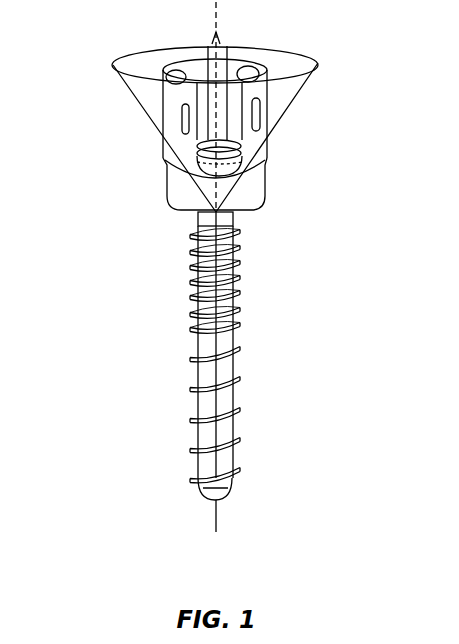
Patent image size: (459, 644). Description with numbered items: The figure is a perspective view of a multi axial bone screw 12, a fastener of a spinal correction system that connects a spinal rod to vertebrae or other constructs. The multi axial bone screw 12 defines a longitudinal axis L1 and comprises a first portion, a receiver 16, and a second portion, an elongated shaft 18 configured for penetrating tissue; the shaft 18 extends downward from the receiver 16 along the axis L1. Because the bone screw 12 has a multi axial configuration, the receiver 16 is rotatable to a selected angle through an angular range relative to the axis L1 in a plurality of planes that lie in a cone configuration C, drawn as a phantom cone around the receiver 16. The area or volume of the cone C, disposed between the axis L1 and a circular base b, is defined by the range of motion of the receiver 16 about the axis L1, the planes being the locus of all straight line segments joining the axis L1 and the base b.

The multi axial bone screw (MAS) 12 is at (104, 314).
The receiver 16 is at (150, 141).
The elongated shaft 18 is at (160, 379).
The circular base b is at (178, 50).
The cone configuration C is at (300, 121).
The longitudinal axis L1 is at (216, 279).